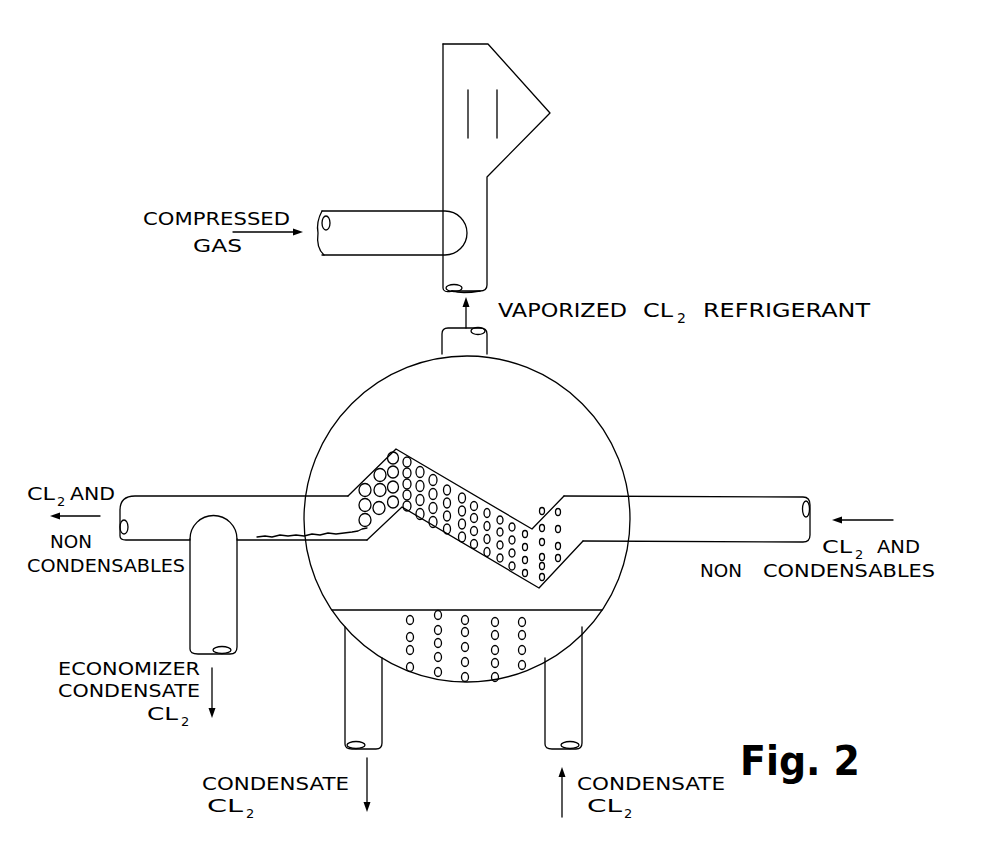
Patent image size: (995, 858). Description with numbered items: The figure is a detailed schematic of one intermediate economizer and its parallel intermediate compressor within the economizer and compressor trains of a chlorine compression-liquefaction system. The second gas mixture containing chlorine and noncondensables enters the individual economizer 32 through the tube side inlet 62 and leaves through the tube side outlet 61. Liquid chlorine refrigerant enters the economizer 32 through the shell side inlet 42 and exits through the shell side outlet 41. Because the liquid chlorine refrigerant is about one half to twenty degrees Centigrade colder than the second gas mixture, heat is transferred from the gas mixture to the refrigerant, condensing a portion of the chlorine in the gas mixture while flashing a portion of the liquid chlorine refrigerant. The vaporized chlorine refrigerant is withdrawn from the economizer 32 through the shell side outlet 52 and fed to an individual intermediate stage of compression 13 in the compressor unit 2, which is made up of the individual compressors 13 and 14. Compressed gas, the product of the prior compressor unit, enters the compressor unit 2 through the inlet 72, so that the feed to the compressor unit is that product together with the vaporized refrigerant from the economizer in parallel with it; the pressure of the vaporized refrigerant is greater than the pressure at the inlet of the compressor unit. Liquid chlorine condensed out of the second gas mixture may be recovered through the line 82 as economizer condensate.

The compressor unit 2 is at (530, 56).
The individual compressor 13 is at (468, 100).
The individual compressor 14 is at (497, 127).
The compressed gas inlet 72 is at (380, 214).
The shell side outlet 52 is at (450, 342).
The individual economizer 32 is at (657, 588).
The tube side outlet 61 is at (258, 497).
The tube side inlet 62 is at (737, 505).
The condensed chlorine line 82 is at (231, 580).
The shell side outlet 41 is at (379, 706).
The shell side inlet 42 is at (580, 690).